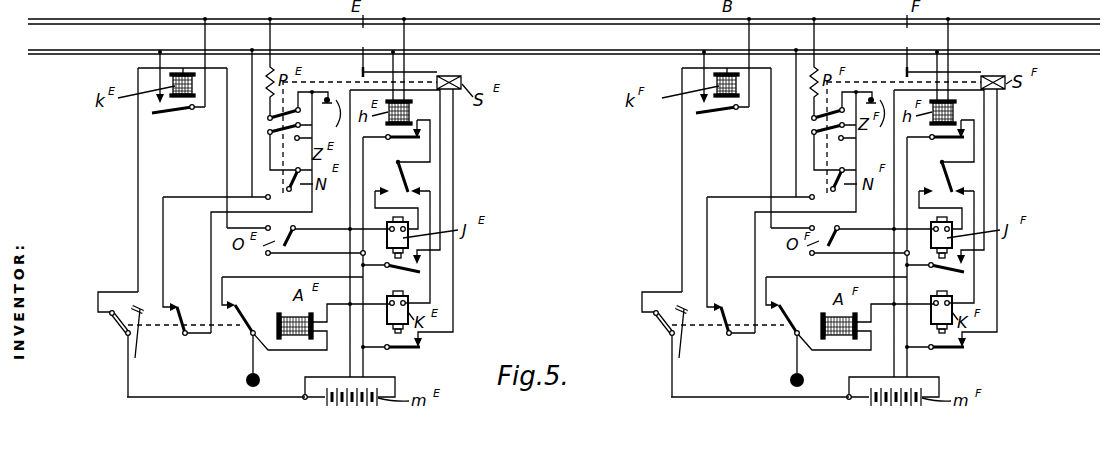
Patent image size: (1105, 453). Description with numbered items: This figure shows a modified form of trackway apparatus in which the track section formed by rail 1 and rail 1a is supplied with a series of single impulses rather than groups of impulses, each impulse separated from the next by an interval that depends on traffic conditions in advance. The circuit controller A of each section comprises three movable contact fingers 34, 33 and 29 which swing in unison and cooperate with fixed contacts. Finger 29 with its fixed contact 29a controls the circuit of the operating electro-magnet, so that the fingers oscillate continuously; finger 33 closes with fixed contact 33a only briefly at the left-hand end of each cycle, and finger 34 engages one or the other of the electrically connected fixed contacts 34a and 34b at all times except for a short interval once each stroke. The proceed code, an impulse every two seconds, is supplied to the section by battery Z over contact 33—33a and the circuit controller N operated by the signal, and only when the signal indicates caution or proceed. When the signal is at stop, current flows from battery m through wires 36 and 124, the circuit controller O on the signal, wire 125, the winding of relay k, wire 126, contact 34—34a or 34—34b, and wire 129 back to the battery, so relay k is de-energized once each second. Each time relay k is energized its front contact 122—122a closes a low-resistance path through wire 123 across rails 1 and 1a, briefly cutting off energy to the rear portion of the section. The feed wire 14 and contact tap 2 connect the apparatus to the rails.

The rail 1 is at (564, 12).
The rail 1a is at (598, 55).
The contact tap E/F on conductors 2 is at (361, 48).
The feed wire from conductor to relay contact 14 is at (206, 37).
The wire 123 is at (160, 63).
The front contact 122 is at (178, 114).
The front contact 122a is at (700, 104).
The wire 125 is at (227, 172).
The wire 126 is at (138, 186).
The wire 124 is at (288, 248).
The movable contact finger 34 is at (121, 332).
The fixed contact 34a is at (660, 293).
The fixed contact 34b is at (423, 345).
The movable contact finger 33 is at (184, 335).
The fixed contact 33a is at (178, 303).
The movable contact finger 29 is at (251, 336).
The fixed contact 29a is at (235, 303).
The wire 129 is at (488, 387).
The wire 36 is at (363, 362).